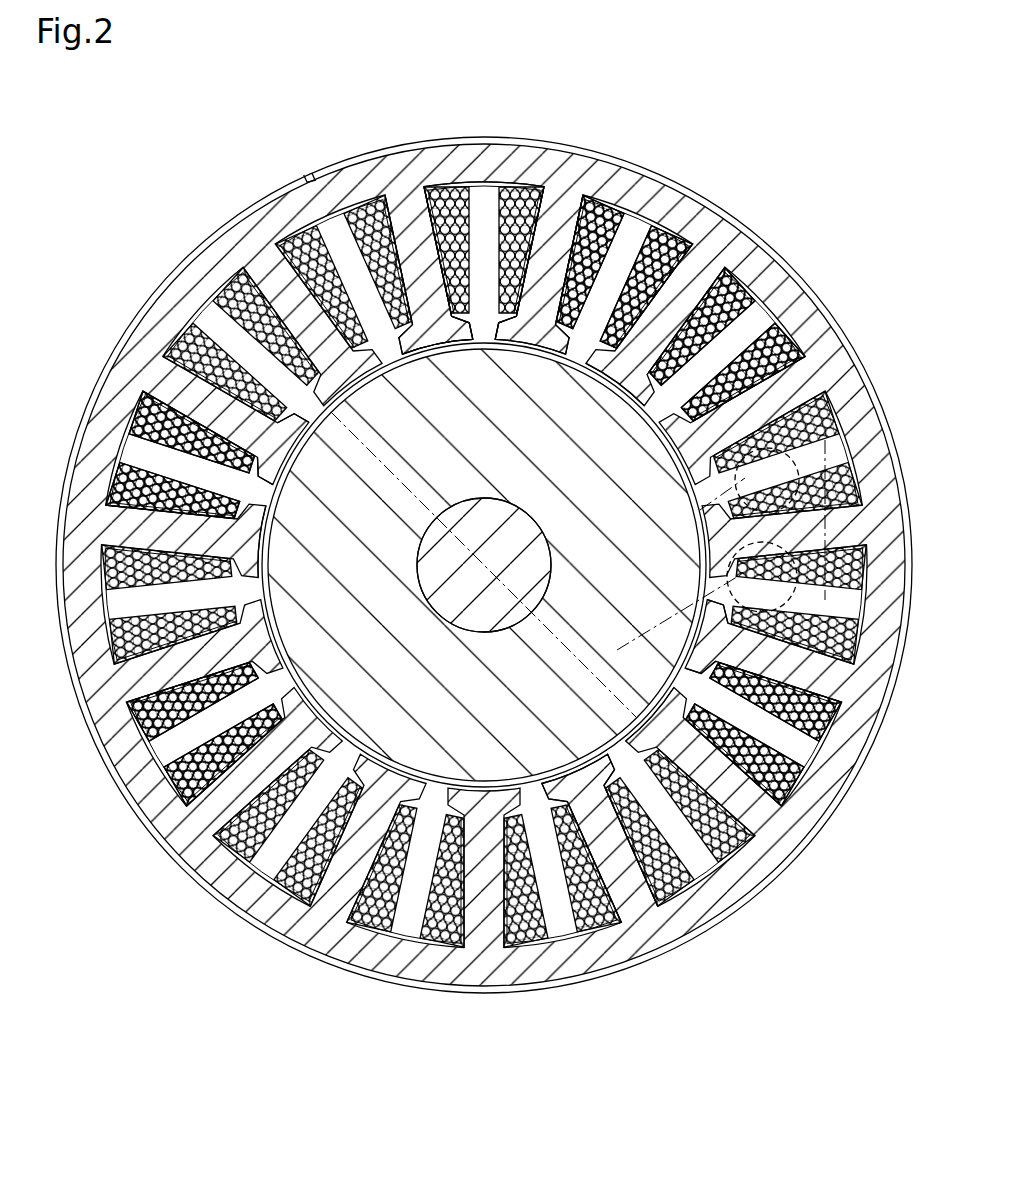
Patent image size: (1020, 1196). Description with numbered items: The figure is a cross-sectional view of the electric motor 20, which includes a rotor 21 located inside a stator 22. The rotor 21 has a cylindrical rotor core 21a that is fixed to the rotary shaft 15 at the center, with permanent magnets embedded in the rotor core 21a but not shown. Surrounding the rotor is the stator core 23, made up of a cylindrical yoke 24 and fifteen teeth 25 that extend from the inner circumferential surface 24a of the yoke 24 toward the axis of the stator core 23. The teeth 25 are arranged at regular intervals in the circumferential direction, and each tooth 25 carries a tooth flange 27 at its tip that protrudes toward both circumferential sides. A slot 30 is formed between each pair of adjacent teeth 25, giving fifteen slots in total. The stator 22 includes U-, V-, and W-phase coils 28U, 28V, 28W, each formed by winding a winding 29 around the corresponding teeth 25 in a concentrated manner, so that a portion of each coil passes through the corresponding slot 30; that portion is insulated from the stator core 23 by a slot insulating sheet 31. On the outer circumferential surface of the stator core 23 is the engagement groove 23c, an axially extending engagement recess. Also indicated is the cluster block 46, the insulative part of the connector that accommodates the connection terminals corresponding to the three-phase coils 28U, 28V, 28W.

The rotary shaft 15 is at (430, 603).
The electric motor 20 is at (730, 101).
The rotor 21 is at (490, 800).
The rotor core 21a is at (590, 800).
The stator 22 is at (216, 235).
The stator core 23 is at (168, 306).
The engagement groove 23c is at (309, 176).
The yoke 24 is at (432, 228).
The inner circumferential surface 24a is at (622, 250).
The teeth 25 is at (432, 352).
The tooth flange 27 is at (297, 452).
The U-phase coil 28U is at (522, 230).
The V-phase coil 28V is at (668, 250).
The W-phase coil 28W is at (386, 240).
The winding 29 is at (483, 218).
The slot 30 is at (488, 182).
The slot insulating sheet 31 is at (528, 186).
The cluster block 46 is at (800, 488).